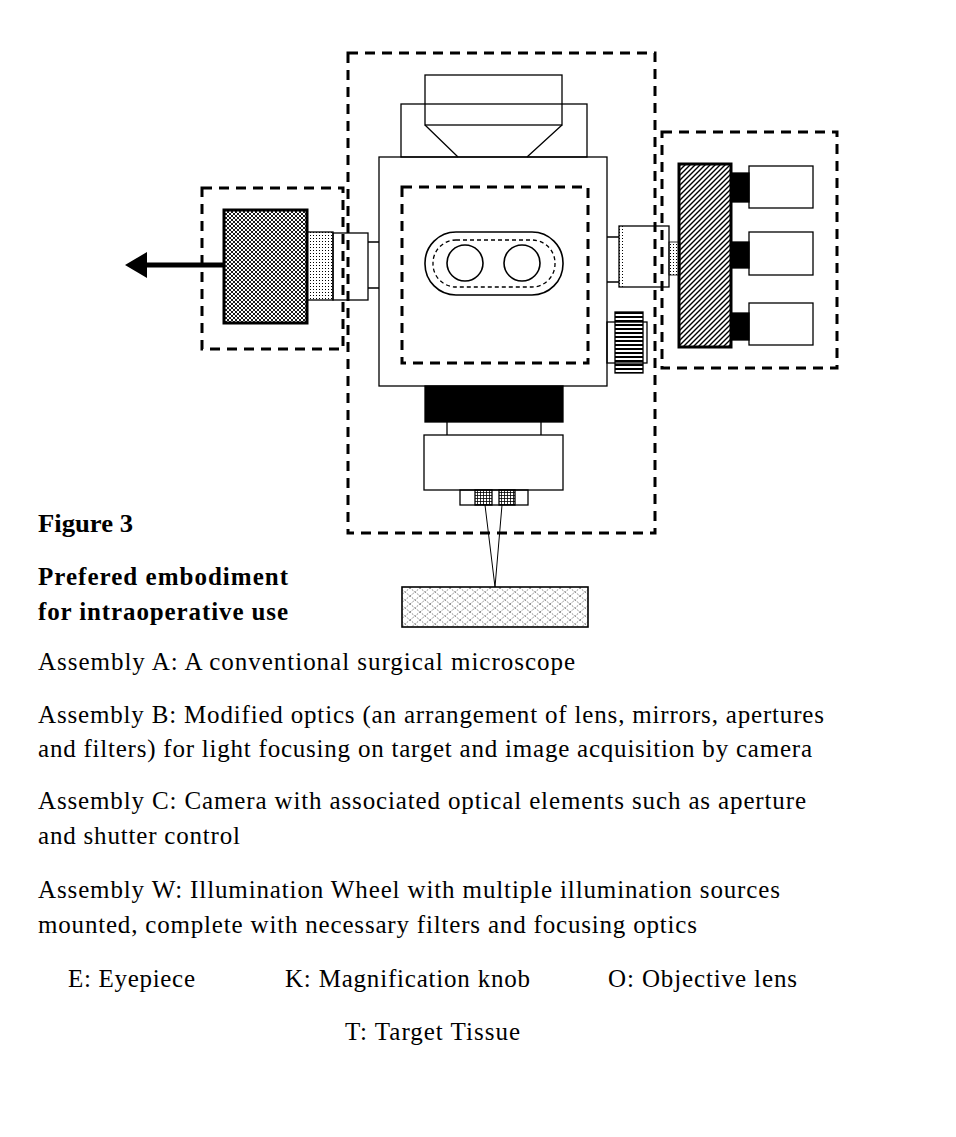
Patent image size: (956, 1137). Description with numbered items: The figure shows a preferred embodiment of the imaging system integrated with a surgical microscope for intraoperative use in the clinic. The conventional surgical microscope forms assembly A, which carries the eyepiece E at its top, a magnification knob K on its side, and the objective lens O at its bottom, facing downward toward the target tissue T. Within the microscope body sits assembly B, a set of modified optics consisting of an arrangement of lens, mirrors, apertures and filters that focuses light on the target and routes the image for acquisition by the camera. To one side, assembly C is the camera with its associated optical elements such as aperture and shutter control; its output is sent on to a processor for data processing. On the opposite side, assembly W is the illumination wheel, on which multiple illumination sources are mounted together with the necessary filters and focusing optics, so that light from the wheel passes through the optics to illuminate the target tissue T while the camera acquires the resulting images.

The surgical microscope assembly A is at (514, 273).
The modified optics assembly B is at (495, 262).
The camera assembly C is at (203, 252).
The illumination wheel assembly W is at (749, 231).
The eyepiece E is at (494, 249).
The magnification knob K is at (627, 358).
The objective lens O is at (493, 480).
The target tissue T is at (505, 607).